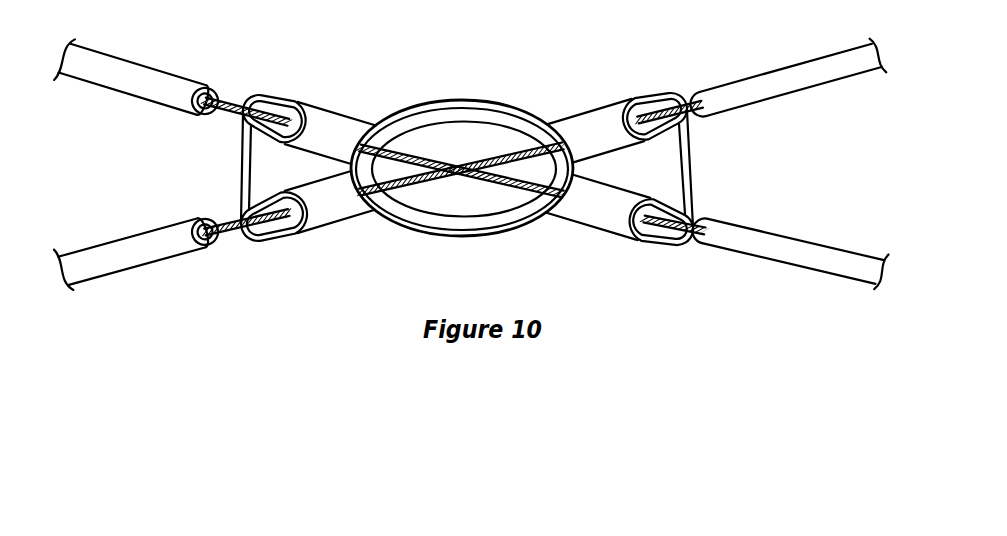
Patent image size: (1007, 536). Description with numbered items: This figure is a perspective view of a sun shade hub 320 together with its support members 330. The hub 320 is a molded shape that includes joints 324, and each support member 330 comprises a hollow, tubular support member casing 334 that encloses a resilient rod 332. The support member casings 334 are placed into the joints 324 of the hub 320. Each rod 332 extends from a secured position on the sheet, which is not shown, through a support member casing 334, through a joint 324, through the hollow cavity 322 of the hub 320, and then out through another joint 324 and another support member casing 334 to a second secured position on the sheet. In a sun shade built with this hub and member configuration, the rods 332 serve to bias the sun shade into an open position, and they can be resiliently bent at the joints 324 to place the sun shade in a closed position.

The sun shade hub 320 is at (452, 198).
The hollow cavity 322 is at (455, 133).
The joints 324 is at (273, 100).
The support members 330 is at (768, 92).
The resilient rods 332 is at (690, 103).
The support member casings 334 is at (137, 80).